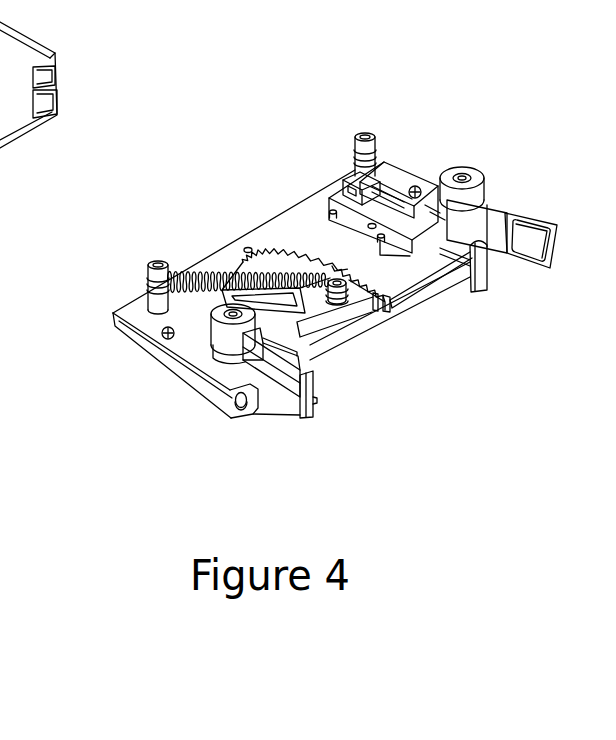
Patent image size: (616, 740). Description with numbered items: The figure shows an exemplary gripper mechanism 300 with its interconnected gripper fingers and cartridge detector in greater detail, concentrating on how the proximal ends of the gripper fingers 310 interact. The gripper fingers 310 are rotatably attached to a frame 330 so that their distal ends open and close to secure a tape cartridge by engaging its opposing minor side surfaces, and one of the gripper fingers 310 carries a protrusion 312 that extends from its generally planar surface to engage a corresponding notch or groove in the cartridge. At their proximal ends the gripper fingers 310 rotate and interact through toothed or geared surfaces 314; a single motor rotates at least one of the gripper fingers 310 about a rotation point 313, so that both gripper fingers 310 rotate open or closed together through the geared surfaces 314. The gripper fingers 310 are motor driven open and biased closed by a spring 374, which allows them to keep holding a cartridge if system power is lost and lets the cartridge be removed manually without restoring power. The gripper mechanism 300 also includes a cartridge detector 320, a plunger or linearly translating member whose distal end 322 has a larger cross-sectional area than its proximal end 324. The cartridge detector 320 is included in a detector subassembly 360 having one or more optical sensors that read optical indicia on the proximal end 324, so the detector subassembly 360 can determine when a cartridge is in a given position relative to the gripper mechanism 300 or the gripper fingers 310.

The gripper mechanism 300 is at (457, 93).
The gripper fingers 310 is at (292, 412).
The protrusion 312 is at (313, 413).
The rotation point 313 is at (227, 322).
The geared surfaces 314 is at (347, 268).
The cartridge detector 320 is at (469, 312).
The distal end 322 is at (484, 284).
The proximal end 324 is at (463, 250).
The frame 330 is at (147, 338).
The detector subassembly 360 is at (340, 183).
The spring 374 is at (218, 265).